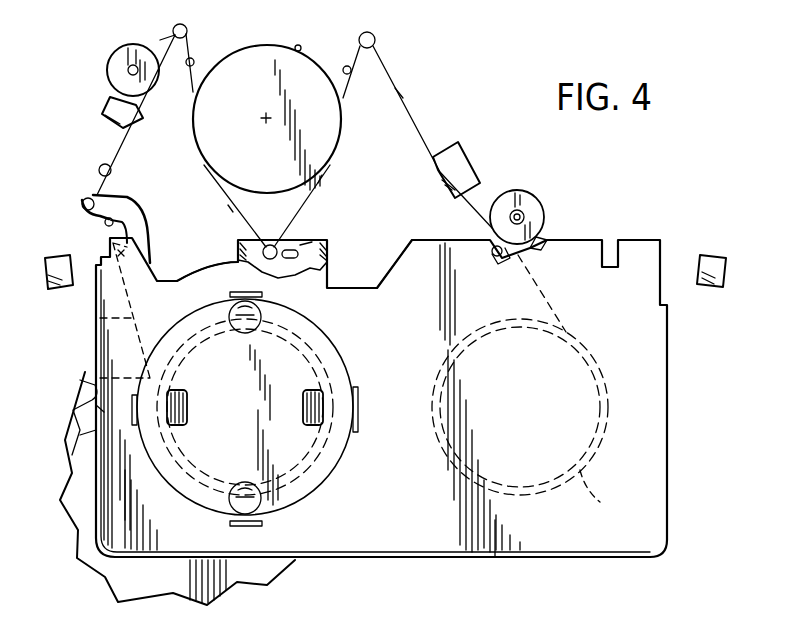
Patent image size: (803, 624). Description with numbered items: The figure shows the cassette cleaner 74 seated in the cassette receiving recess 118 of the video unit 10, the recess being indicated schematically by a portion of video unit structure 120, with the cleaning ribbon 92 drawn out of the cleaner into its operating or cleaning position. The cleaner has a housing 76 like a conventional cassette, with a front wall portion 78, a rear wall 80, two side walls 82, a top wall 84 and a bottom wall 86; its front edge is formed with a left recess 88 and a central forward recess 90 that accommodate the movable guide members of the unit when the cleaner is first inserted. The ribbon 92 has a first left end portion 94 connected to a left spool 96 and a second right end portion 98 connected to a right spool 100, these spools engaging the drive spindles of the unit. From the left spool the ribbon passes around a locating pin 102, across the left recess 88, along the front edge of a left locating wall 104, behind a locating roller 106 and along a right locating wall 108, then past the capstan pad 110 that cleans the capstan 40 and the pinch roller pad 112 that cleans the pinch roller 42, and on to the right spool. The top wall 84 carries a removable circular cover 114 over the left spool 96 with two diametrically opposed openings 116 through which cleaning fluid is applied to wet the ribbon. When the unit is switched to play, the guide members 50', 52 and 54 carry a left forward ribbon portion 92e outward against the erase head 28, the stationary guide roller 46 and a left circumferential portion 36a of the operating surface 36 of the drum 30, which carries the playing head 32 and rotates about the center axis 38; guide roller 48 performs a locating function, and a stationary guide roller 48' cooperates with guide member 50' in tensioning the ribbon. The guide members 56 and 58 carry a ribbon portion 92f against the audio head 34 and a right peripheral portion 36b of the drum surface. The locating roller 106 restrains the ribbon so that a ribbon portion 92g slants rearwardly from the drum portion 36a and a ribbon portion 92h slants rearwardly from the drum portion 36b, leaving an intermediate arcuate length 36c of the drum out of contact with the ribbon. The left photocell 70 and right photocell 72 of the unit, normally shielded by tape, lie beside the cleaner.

The video unit 10 is at (462, 124).
The erase head 28 is at (110, 108).
The drum 30 is at (268, 97).
The playing head 32 is at (301, 45).
The audio head 34 is at (462, 160).
The peripheral cylindrically-shaped operating surface 36 is at (287, 140).
The left circumferential portion of the drum surface 36a is at (193, 160).
The right peripheral portion of the drum surface 36b is at (345, 120).
The intermediate arcuate length of the drum surface 36c is at (243, 193).
The center axis 38 is at (262, 118).
The capstan 40 is at (494, 255).
The pinch roller 42 is at (535, 210).
The guide roller 46 is at (108, 60).
The guide roller 48 is at (63, 214).
The stationary guide roller 48' is at (76, 161).
The guide member 50' is at (62, 191).
The guide member 52 is at (186, 28).
The guide member 54 is at (194, 58).
The guide member 56 is at (351, 73).
The guide member 58 is at (375, 38).
The left photocell 70 is at (60, 282).
The right photocell 72 is at (715, 290).
The cassette cleaner 74 is at (585, 563).
The housing 76 is at (440, 563).
The front wall portion 78 is at (425, 242).
The rear wall 80 is at (495, 556).
The side walls 82 is at (101, 348).
The top wall 84 is at (400, 509).
The bottom wall 86 is at (312, 242).
The left recess 88 is at (178, 281).
The central forward recess 90 is at (368, 277).
The cleaning ribbon 92 is at (80, 322).
The left forward ribbon portion 92e is at (160, 40).
The right ribbon portion 92f is at (403, 97).
The ribbon portion 92g is at (233, 212).
The ribbon portion 92h is at (318, 183).
The first left end portion 94 is at (85, 372).
The left spool 96 is at (160, 448).
The second right end portion 98 is at (585, 335).
The right spool 100 is at (608, 491).
The locating pin 102 is at (113, 243).
The left locating wall 104 is at (274, 238).
The locating roller 106 is at (272, 245).
The right locating wall 108 is at (327, 240).
The capstan pad 110 is at (505, 262).
The pinch roller pad 112 is at (545, 238).
The removable circular cover 114 is at (218, 411).
The openings 116 is at (237, 409).
The cassette receiving recess 118 is at (96, 408).
The video unit structure 120 is at (80, 432).